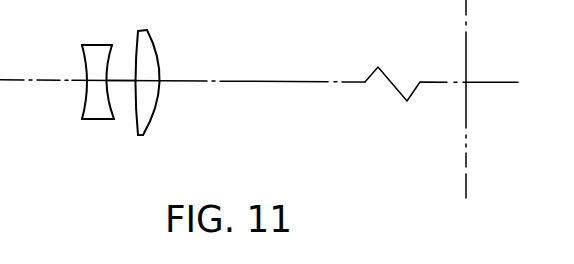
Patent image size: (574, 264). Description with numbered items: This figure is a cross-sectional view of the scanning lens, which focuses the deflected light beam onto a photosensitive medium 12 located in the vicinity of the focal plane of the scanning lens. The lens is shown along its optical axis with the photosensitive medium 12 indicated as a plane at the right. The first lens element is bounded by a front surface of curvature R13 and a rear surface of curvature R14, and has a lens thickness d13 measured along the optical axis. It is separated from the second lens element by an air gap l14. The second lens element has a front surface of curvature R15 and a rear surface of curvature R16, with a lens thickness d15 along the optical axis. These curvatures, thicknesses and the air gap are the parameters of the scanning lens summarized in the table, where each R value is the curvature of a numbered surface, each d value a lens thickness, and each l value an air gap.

The lens thickness d13 is at (79, 104).
The surface curvature R13 is at (82, 107).
The surface curvature R14 is at (77, 63).
The air gap l14 is at (120, 79).
The lens thickness d15 is at (168, 106).
The surface curvature R15 is at (137, 128).
The surface curvature R16 is at (153, 120).
The photosensitive medium 12 is at (465, 173).